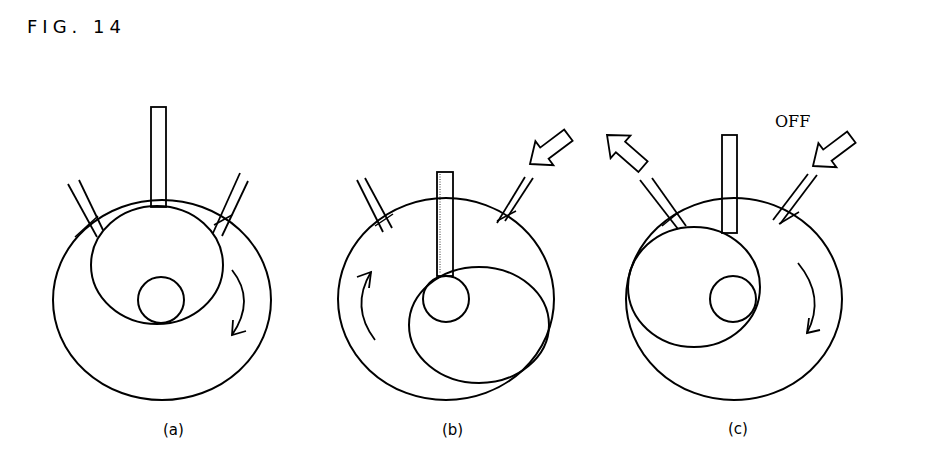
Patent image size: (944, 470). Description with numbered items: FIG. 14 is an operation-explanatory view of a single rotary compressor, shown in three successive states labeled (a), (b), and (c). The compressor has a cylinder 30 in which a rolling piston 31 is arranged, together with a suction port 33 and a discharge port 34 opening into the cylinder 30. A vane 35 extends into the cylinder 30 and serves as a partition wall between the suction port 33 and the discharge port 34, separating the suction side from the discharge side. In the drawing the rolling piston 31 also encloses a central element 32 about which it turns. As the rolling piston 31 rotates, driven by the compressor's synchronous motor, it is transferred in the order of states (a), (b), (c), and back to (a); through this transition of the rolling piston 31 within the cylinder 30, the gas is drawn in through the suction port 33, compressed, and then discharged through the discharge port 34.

The cylinder 30 is at (176, 300).
The rolling piston 31 is at (194, 265).
The shaft / central pin 32 is at (150, 305).
The suction port 33 is at (257, 190).
The discharge port 34 is at (85, 175).
The vane 35 is at (188, 152).